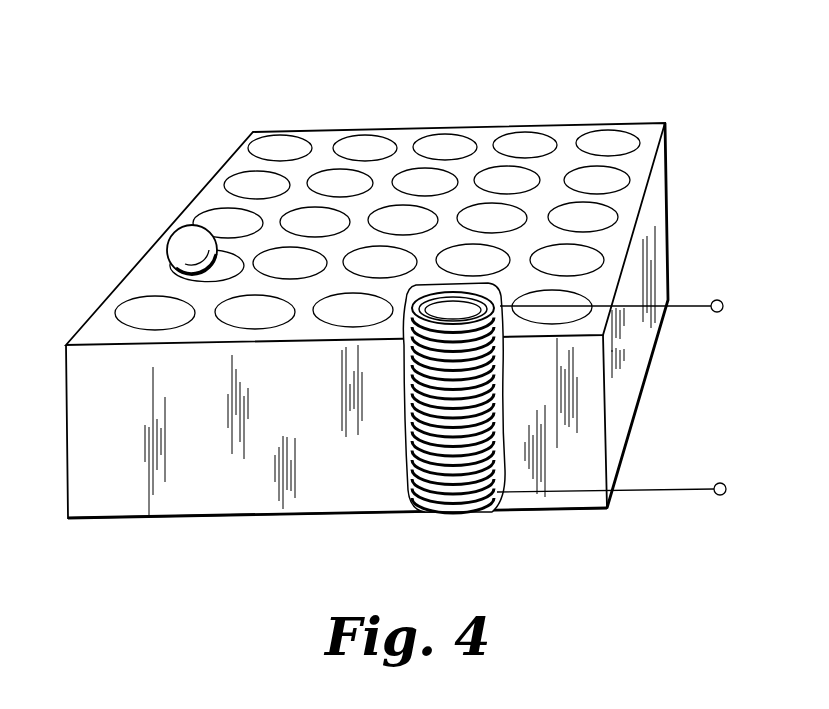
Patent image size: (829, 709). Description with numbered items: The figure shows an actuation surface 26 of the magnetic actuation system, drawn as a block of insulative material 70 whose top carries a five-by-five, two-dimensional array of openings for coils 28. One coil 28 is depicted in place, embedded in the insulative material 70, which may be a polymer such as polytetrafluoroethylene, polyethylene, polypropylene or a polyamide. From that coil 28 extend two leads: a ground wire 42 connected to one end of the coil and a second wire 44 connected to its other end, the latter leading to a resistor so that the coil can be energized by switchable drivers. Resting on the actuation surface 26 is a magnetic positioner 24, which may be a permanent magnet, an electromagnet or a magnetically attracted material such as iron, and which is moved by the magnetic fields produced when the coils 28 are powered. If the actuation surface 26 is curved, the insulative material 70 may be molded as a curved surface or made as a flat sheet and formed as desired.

The actuation surface 26 is at (594, 82).
The magnetic positioner 24 is at (177, 228).
The coil 28 is at (415, 448).
The ground wire 42 is at (683, 308).
The second wire 44 is at (688, 487).
The insulative material 70 is at (667, 202).